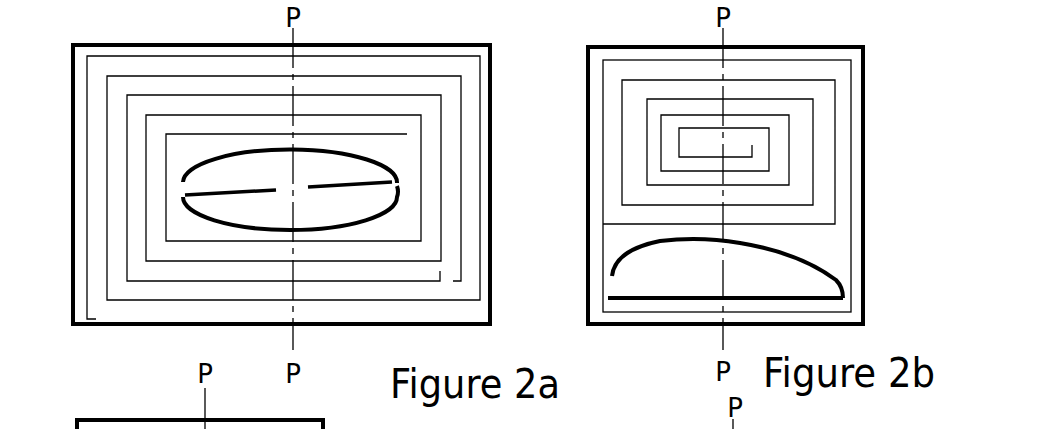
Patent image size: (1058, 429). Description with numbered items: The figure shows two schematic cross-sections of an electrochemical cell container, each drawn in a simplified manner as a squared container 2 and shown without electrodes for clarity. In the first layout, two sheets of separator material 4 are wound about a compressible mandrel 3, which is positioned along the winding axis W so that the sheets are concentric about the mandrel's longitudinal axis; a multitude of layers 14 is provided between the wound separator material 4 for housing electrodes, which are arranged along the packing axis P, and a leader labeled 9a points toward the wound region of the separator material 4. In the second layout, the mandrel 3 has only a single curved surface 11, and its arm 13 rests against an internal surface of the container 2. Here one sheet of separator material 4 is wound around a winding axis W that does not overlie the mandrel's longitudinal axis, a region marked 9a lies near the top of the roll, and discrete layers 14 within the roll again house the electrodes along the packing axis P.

In FIG. 2a, the container 2 is at (490, 209).
In FIG. 2b, the container 2 is at (588, 196).
In FIG. 2a, the compressible mandrel 3 is at (380, 210).
In FIG. 2b, the compressible mandrel 3 is at (620, 297).
In FIG. 2a, the separator material 4 is at (441, 175).
In FIG. 2b, the separator material 4 is at (622, 103).
In FIG. 2a, the winding end 9a is at (285, 233).
In FIG. 2b, the winding end 9a is at (727, 235).
In FIG. 2b, the first mandrel surface 11 is at (835, 273).
In FIG. 2b, the arm 13 is at (815, 301).
In FIG. 2a, the layers 14 is at (163, 151).
In FIG. 2b, the layers 14 is at (798, 130).